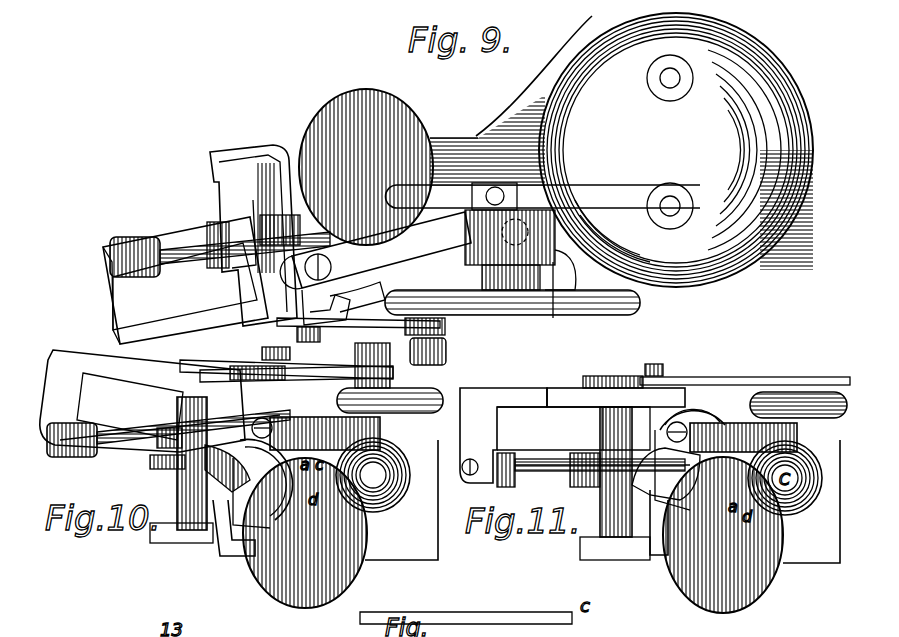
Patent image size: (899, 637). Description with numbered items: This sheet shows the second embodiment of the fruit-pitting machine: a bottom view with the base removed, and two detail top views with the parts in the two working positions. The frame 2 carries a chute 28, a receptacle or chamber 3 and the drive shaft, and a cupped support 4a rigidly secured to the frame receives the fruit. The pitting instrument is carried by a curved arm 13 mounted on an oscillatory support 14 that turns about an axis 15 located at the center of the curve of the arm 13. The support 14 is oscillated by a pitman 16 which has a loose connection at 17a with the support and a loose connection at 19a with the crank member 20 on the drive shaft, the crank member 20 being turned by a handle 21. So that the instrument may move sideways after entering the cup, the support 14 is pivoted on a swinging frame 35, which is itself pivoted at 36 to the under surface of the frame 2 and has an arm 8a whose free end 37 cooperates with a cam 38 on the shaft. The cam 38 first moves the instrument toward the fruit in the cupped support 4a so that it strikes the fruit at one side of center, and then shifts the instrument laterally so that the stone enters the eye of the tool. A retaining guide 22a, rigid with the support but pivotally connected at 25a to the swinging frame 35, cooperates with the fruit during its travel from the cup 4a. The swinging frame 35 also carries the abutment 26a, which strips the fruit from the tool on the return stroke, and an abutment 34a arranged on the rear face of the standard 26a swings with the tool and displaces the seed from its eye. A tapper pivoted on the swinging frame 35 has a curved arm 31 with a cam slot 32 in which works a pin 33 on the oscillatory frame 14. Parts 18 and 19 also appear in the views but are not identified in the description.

In FIG. 9, the frame 2 is at (461, 152).
In FIG. 10, the frame 2 is at (401, 500).
In FIG. 11, the frame 2 is at (811, 501).
In FIG. 9, the receptacle or chamber 3 is at (676, 150).
In FIG. 10, the cupped support 4a is at (386, 508).
In FIG. 11, the cupped support 4a is at (793, 515).
In FIG. 9, the arm 8a is at (490, 236).
In FIG. 10, the curved arm 13 is at (90, 462).
In FIG. 11, the curved arm 13 is at (555, 462).
In FIG. 9, the oscillatory support 14 is at (168, 322).
In FIG. 10, the oscillatory support 14 is at (130, 378).
In FIG. 11, the oscillatory support 14 is at (537, 400).
In FIG. 10, the axis 15 is at (177, 483).
In FIG. 11, the axis 15 is at (600, 522).
In FIG. 9, the pitman 16 is at (312, 340).
In FIG. 10, the pitman 16 is at (318, 380).
In FIG. 9, the loose connection 17a is at (330, 322).
In FIG. 11, the loose connection 17a is at (656, 368).
In FIG. 9, the bar 18 is at (206, 372).
In FIG. 11, the bar 18 is at (560, 390).
In FIG. 10, the nut 19 is at (392, 376).
In FIG. 9, the loose connection 19a is at (446, 328).
In FIG. 9, the crank member 20 is at (640, 302).
In FIG. 10, the crank member 20 is at (422, 412).
In FIG. 11, the crank member 20 is at (784, 405).
In FIG. 9, the handle 21 is at (447, 352).
In FIG. 10, the retaining guide 22a is at (382, 437).
In FIG. 11, the retaining guide 22a is at (800, 440).
In FIG. 10, the pivotal connection 25a is at (198, 423).
In FIG. 11, the pivotal connection 25a is at (692, 430).
In FIG. 10, the abutment 26a is at (268, 500).
In FIG. 11, the abutment 26a is at (682, 412).
In FIG. 9, the chute 28 is at (366, 167).
In FIG. 10, the chute 28 is at (338, 582).
In FIG. 11, the chute 28 is at (728, 606).
In FIG. 9, the curved arm 31 is at (226, 232).
In FIG. 10, the curved arm 31 is at (160, 434).
In FIG. 11, the curved arm 31 is at (592, 484).
In FIG. 9, the cam slot 32 is at (161, 260).
In FIG. 9, the pin 33 is at (262, 252).
In FIG. 10, the abutment 34a is at (227, 470).
In FIG. 11, the abutment 34a is at (655, 500).
In FIG. 9, the swinging frame 35 is at (283, 144).
In FIG. 10, the swinging frame 35 is at (215, 545).
In FIG. 11, the swinging frame 35 is at (663, 560).
In FIG. 9, the pivot 36 is at (332, 268).
In FIG. 9, the free end 37 is at (468, 238).
In FIG. 9, the cam 38 is at (542, 300).